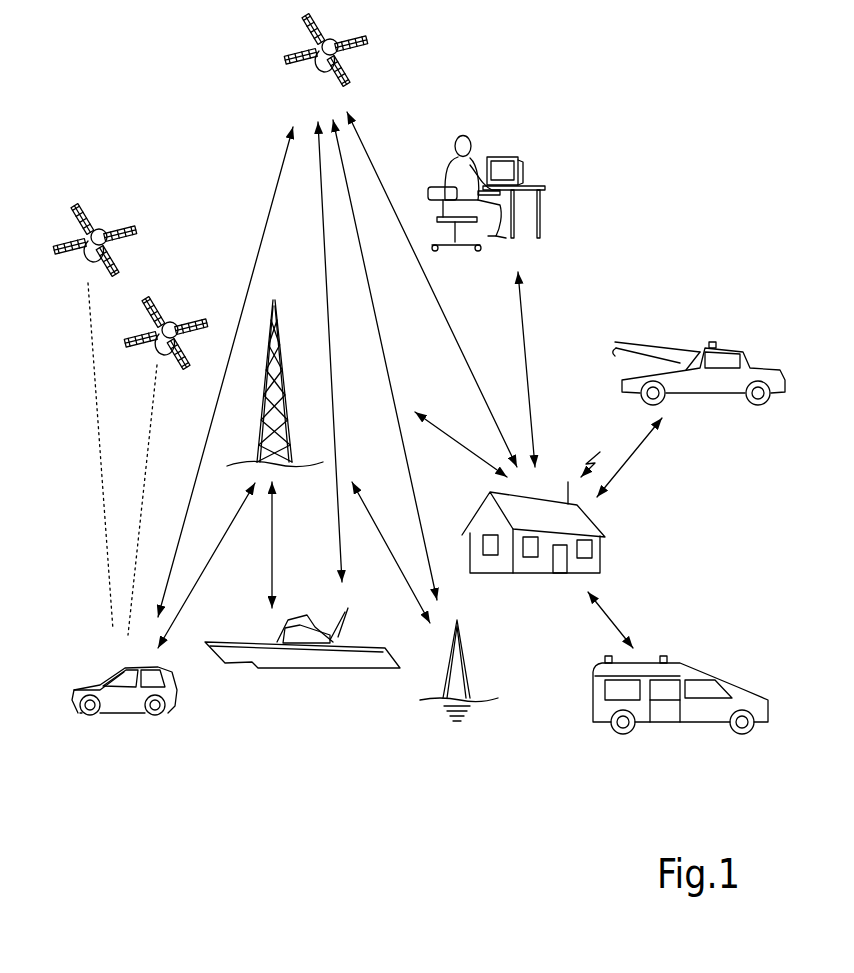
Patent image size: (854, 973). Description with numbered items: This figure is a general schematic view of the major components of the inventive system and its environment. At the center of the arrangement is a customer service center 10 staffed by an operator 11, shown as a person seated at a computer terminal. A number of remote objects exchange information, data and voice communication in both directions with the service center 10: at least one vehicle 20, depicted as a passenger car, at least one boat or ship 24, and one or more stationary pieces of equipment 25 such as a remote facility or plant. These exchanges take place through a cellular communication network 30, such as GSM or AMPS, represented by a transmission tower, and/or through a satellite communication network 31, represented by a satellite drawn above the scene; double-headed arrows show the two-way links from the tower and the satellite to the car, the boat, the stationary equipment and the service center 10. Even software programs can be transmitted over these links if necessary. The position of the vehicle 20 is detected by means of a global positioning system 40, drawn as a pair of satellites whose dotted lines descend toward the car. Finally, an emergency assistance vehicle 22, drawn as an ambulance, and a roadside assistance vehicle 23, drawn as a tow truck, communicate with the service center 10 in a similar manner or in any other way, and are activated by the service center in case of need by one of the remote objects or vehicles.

The customer service center 10 is at (547, 534).
The operator 11 is at (486, 185).
The vehicle 20 is at (124, 708).
The emergency assistance vehicle 22 is at (680, 710).
The roadside assistance vehicle 23 is at (699, 372).
The boat or ship 24 is at (302, 656).
The stationary piece of equipment 25 is at (461, 677).
The cellular communication network 30 is at (275, 371).
The satellite communication network 31 is at (325, 43).
The global positioning system 40 is at (130, 287).